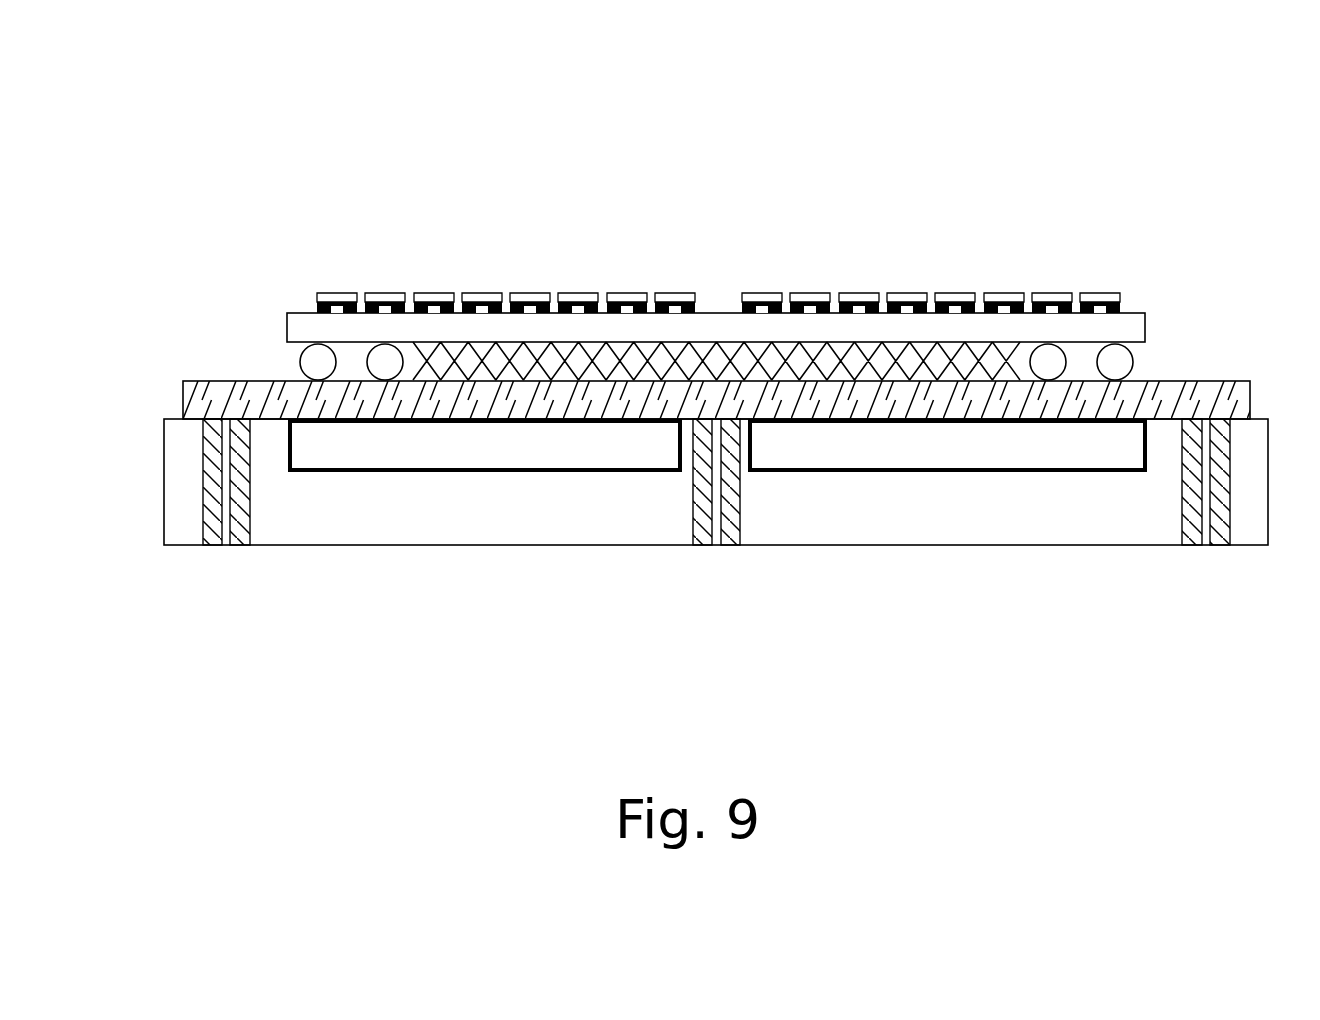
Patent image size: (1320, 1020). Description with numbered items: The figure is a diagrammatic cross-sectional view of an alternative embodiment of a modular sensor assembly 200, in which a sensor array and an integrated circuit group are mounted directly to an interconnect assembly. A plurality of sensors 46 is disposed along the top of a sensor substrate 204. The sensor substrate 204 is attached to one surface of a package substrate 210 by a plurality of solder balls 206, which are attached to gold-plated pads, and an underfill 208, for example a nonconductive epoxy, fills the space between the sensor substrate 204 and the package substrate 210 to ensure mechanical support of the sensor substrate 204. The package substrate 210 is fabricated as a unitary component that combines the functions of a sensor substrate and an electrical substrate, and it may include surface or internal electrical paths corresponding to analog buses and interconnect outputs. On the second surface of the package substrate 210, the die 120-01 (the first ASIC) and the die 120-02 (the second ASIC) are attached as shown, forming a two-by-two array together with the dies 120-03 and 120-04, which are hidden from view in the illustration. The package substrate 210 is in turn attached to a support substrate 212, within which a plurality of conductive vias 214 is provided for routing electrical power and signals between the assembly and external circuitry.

The modular sensor assembly 200 is at (470, 138).
The sensors 46 is at (530, 292).
The sensor substrate 204 is at (1138, 312).
The solder balls 206 is at (298, 367).
The underfill 208 is at (707, 358).
The package substrate 210 is at (1178, 378).
The support substrate 212 is at (160, 527).
The conductive vias 214 is at (200, 522).
The die 120-01 is at (1025, 473).
The die 120-02 is at (505, 473).
The die 120-03 is at (840, 473).
The die 120-04 is at (368, 473).